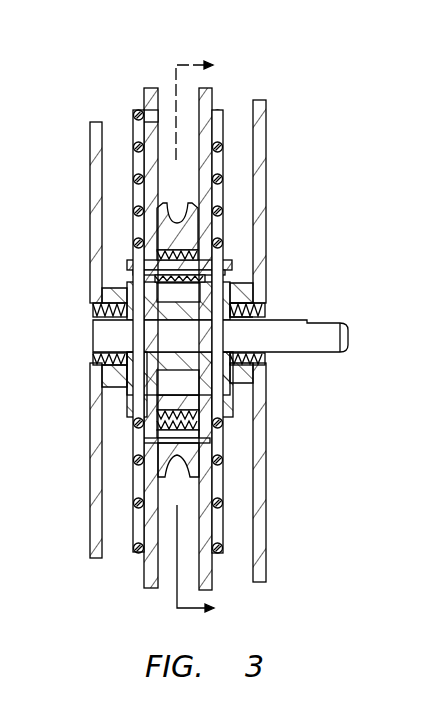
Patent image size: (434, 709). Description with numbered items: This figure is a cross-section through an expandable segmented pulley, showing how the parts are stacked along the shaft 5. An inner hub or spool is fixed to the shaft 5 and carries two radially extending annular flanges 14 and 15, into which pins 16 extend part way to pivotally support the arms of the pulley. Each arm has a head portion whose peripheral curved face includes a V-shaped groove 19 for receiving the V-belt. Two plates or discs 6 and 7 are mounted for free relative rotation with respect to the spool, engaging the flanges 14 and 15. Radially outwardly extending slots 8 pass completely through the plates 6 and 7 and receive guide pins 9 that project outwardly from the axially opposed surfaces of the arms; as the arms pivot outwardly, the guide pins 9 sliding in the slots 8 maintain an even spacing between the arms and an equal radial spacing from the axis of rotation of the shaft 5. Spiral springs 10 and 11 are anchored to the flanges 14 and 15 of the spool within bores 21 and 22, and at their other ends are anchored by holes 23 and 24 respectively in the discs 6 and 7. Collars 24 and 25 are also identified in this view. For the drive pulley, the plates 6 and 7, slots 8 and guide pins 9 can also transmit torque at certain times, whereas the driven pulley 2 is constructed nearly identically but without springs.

The driven pulley 2 is at (201, 334).
The shaft 5 is at (320, 320).
The plate 6 is at (204, 90).
The plate 7 is at (148, 90).
The slots 8 is at (150, 488).
The guide pins 9 is at (150, 441).
The spiral spring 10 is at (137, 113).
The spiral spring 11 is at (219, 115).
The annular flange 14 is at (127, 283).
The annular flange 15 is at (239, 287).
The pins 16 is at (225, 263).
The V-shaped groove 19 is at (189, 216).
The bore 21 is at (140, 400).
The bore 22 is at (217, 402).
The hole 23 is at (151, 115).
The hole 24 is at (218, 113).
The collar 25 is at (261, 305).